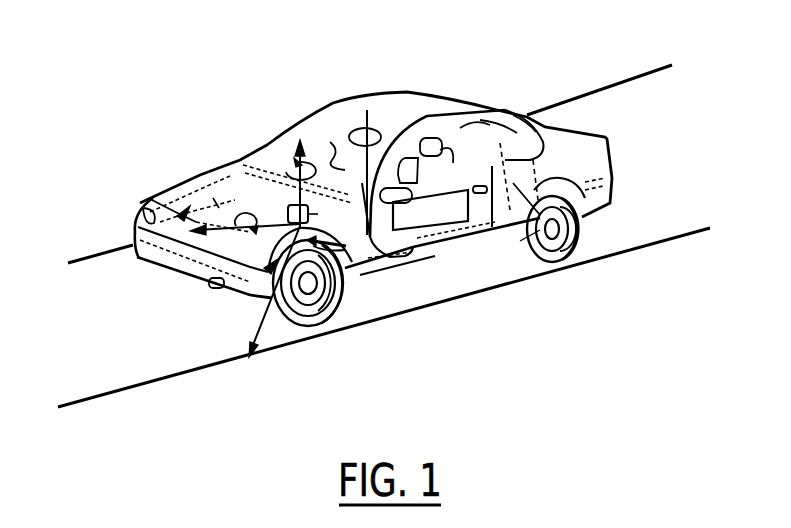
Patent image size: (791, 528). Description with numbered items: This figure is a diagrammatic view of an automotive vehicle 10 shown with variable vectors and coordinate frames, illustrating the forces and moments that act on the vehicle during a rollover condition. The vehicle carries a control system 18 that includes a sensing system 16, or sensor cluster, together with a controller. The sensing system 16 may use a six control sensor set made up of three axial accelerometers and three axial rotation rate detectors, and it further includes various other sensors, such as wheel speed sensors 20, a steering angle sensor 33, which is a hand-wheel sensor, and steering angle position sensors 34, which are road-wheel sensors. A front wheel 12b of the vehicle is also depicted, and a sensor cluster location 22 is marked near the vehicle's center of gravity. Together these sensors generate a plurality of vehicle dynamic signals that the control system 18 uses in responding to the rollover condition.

The vehicle 10 is at (398, 90).
The front wheel 12b is at (321, 326).
The sensing system 16 is at (313, 223).
The control system 18 is at (462, 176).
The wheel speed sensors 20 is at (522, 241).
The sensor cluster at center of gravity 22 is at (298, 230).
The steering angle sensor 33 is at (356, 182).
The steering angle position sensors 34 is at (186, 211).